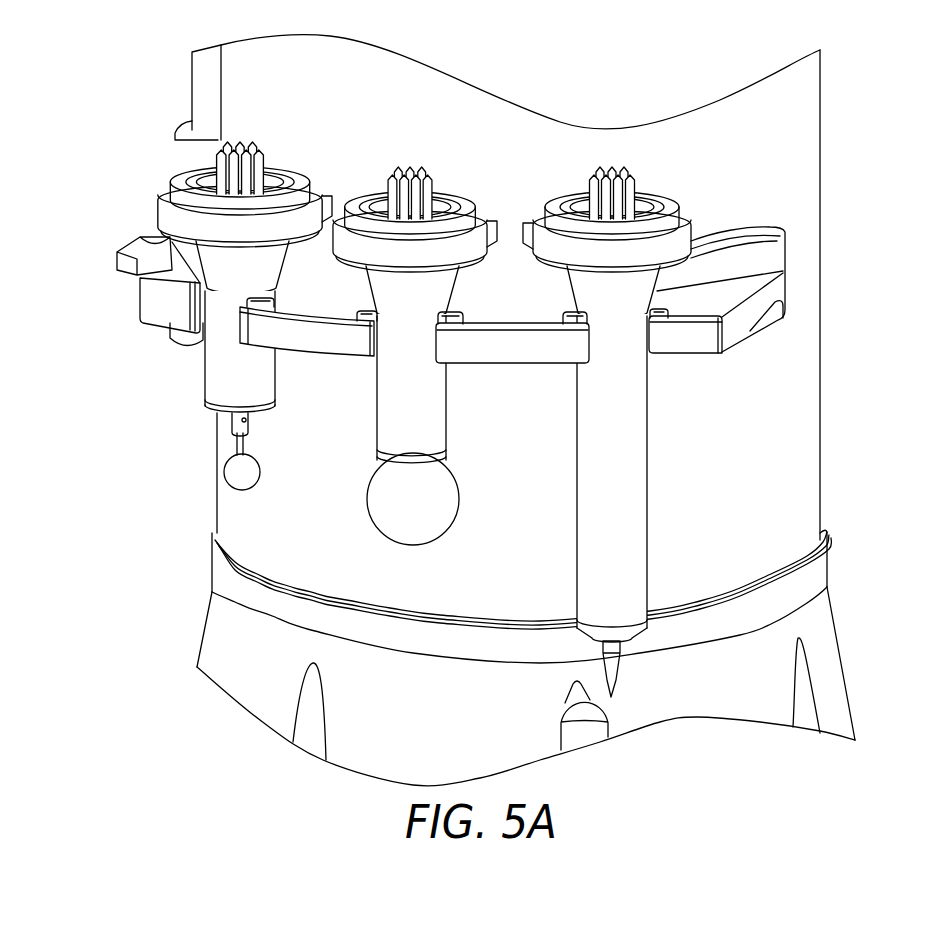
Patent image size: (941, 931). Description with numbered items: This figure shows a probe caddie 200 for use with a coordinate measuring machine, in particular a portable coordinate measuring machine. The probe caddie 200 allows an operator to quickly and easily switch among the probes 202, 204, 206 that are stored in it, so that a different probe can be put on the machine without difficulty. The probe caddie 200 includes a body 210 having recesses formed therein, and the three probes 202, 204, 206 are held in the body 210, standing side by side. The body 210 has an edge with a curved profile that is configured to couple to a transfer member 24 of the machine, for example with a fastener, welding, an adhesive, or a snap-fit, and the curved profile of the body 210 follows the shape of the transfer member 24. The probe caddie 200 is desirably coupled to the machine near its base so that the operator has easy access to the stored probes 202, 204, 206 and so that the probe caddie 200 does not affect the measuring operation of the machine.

The transfer member 24 is at (805, 460).
The probe caddie 200 is at (762, 290).
The probe 202 is at (214, 382).
The probe 204 is at (433, 410).
The probe 206 is at (633, 488).
The body 210 is at (690, 340).